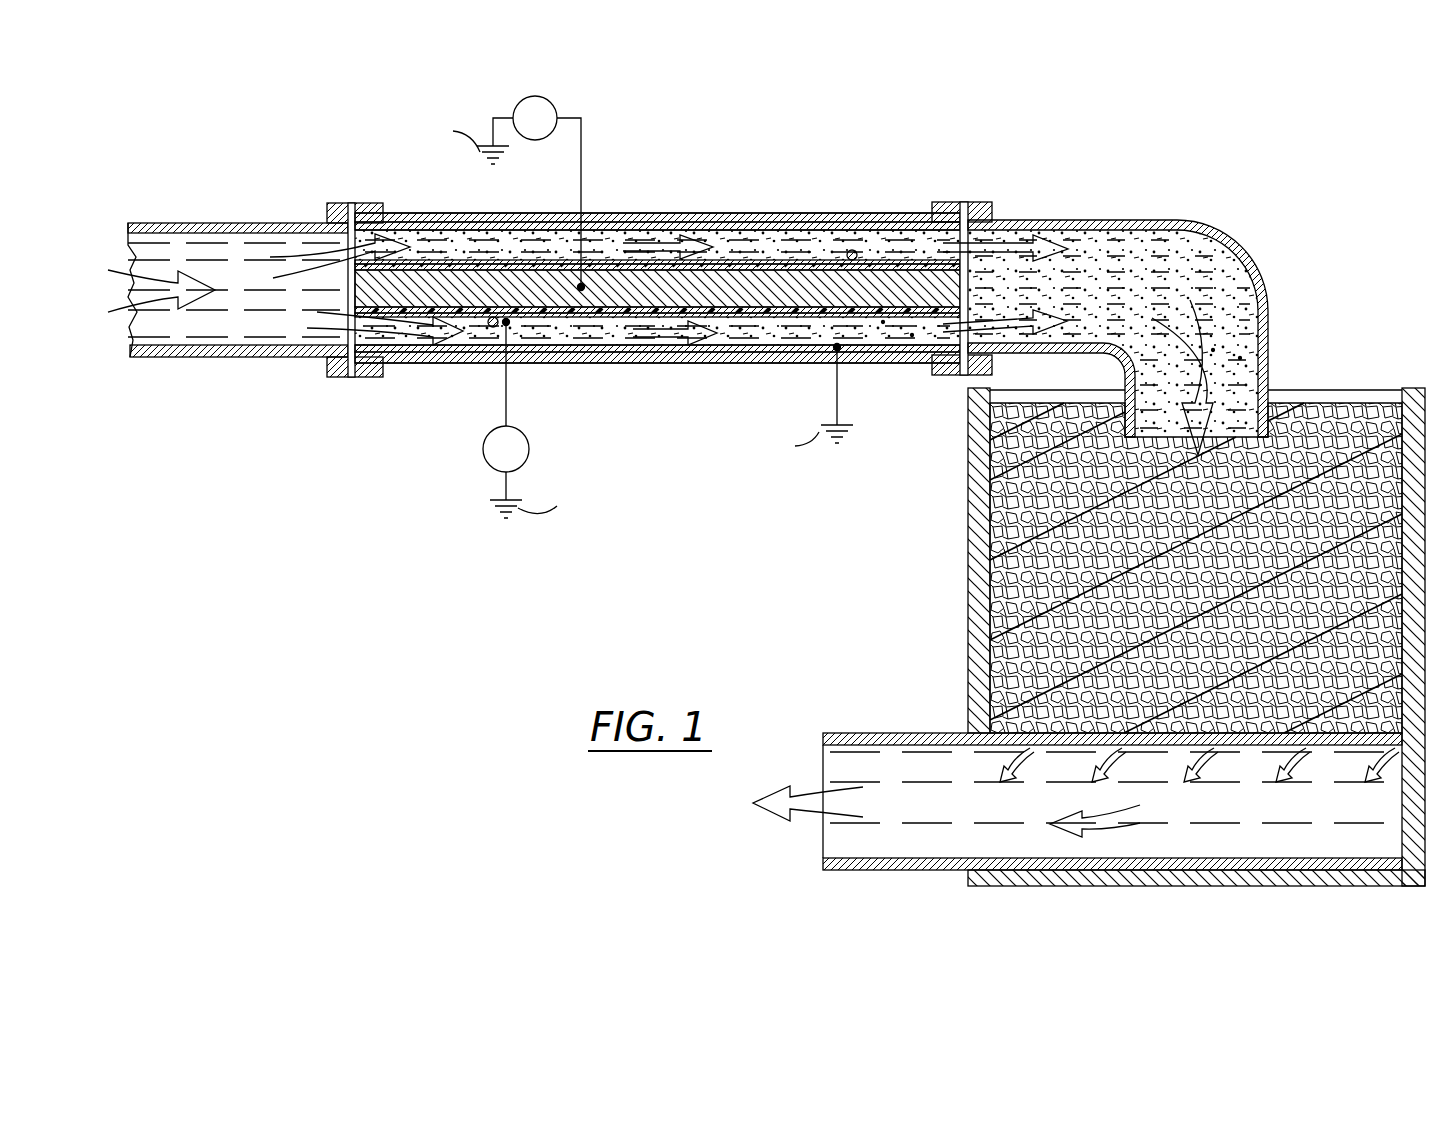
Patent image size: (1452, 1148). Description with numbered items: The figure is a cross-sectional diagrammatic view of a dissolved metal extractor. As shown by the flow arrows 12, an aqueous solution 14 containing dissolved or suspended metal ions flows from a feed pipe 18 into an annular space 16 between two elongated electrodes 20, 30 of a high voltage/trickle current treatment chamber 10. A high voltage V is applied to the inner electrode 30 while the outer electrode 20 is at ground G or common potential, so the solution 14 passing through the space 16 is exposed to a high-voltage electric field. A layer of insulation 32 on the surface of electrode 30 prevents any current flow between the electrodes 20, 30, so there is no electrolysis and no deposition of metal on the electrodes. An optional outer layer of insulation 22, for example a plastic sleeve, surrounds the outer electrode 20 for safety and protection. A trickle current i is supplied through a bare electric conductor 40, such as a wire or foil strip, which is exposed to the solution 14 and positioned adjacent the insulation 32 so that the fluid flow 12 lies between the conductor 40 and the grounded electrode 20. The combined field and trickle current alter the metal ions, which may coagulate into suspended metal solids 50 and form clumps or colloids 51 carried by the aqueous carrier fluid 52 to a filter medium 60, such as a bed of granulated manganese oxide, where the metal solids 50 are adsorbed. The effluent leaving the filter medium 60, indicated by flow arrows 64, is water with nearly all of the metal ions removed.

The high voltage/trickle current treatment chamber 10 is at (462, 212).
The flow arrows 12 is at (160, 283).
The aqueous solution 14 is at (310, 232).
The space 16 is at (453, 238).
The feed pipe 18 is at (218, 357).
The electrode 20 is at (698, 215).
The outer layer of insulation 22 is at (765, 215).
The electrode 30 is at (857, 257).
The layer of insulation 32 is at (905, 258).
The bare electric conductor 40 is at (803, 247).
The suspended metal solids 50 is at (912, 335).
The clumps or colloids 51 is at (1240, 358).
The aqueous carrier fluid 52 is at (1092, 337).
The filter medium 60 is at (1345, 403).
The flow arrows 64 is at (1083, 821).